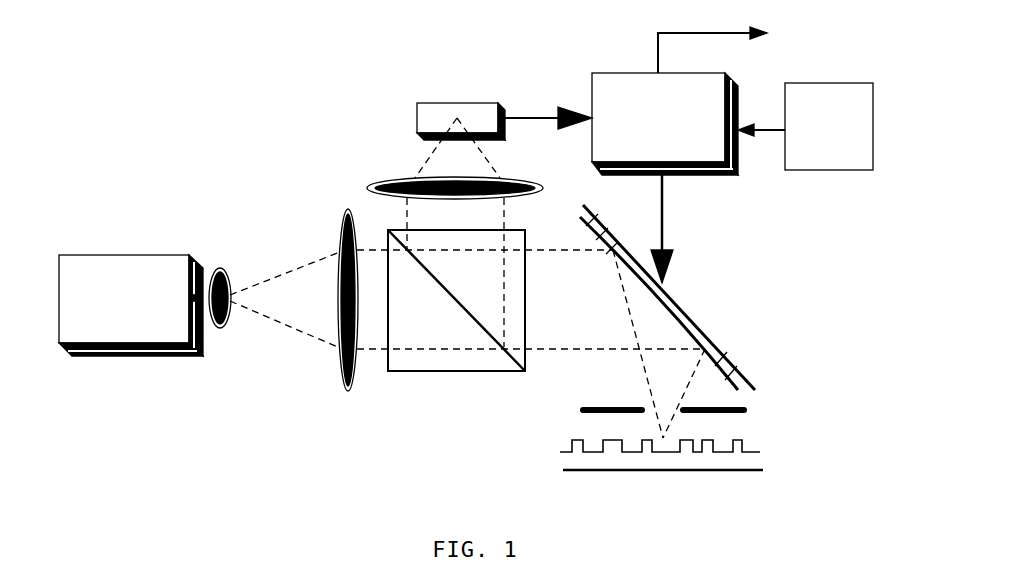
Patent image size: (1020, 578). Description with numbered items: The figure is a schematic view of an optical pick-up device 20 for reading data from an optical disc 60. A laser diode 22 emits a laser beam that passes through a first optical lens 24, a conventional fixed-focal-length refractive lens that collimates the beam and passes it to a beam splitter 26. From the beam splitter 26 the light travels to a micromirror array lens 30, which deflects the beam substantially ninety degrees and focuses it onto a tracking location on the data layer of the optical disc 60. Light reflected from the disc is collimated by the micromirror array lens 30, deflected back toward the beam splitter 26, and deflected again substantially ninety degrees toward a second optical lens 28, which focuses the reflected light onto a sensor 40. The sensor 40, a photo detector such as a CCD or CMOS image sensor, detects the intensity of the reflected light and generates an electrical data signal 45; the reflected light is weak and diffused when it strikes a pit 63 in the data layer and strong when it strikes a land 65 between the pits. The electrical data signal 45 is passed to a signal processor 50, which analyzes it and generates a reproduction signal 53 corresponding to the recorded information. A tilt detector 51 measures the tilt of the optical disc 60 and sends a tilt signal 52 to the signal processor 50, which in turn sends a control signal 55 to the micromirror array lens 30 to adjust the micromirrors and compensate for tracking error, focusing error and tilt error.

The optical pick-up device 20 is at (153, 130).
The laser diode 22 is at (153, 265).
The first optical lens 24 is at (350, 362).
The beam splitter 26 is at (417, 360).
The second optical lens 28 is at (373, 185).
The micromirror array lens 30 is at (720, 353).
The sensor 40 is at (427, 118).
The electrical data signal 45 is at (543, 117).
The signal processor 50 is at (690, 153).
The tilt detector 51 is at (840, 152).
The tilt signal 52 is at (768, 132).
The reproduction signal 53 is at (655, 50).
The control signal 55 is at (663, 215).
The optical disc 60 is at (560, 455).
The pit 63 is at (750, 452).
The land 65 is at (733, 440).